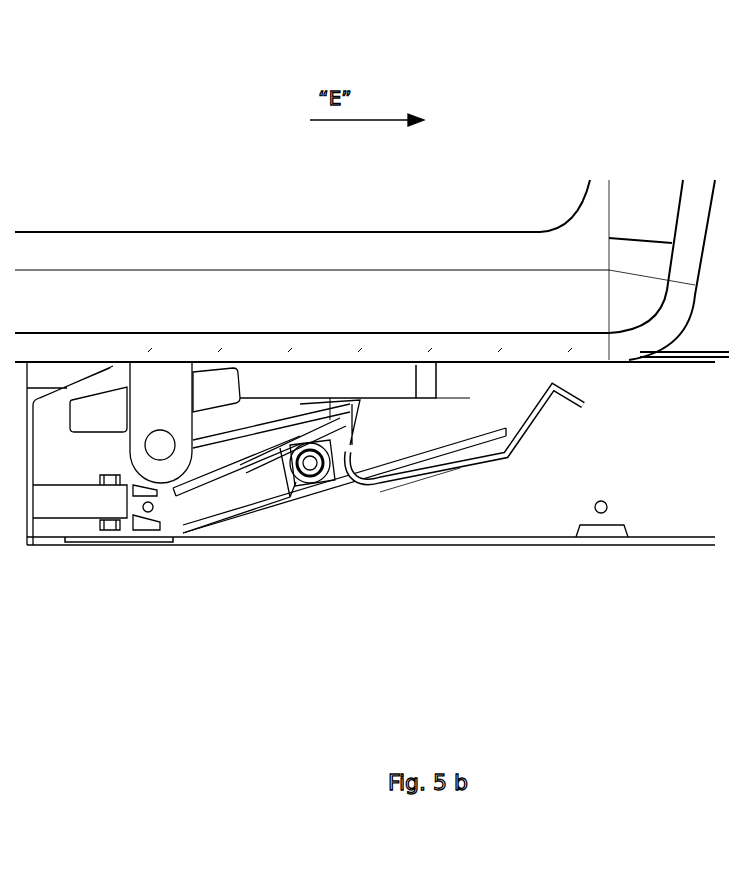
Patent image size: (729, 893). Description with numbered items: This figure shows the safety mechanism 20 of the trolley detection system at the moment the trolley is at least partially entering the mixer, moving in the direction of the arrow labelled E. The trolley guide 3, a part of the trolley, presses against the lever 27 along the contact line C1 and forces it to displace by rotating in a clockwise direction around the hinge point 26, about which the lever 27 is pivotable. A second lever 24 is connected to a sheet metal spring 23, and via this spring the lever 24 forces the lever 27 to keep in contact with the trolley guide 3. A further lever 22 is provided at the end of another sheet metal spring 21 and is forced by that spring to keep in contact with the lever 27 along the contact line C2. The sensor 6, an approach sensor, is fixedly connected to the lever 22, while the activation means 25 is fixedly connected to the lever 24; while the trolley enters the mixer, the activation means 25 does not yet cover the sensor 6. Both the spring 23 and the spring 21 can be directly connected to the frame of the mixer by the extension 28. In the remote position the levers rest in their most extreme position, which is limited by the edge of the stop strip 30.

The trolley guide 3 is at (397, 378).
The sensor 6 is at (320, 470).
The safety mechanism 20 is at (461, 395).
The sheet metal spring 21 is at (162, 525).
The lever 22 is at (536, 420).
The spring 23 is at (173, 488).
The lever 24 is at (210, 477).
The activation means 25 is at (268, 488).
The pivot 26 is at (160, 445).
The lever 27 is at (480, 445).
The extension 28 is at (58, 500).
The stop strip 30 is at (218, 388).
The contact line C1 is at (368, 397).
The contact line C2 is at (377, 492).